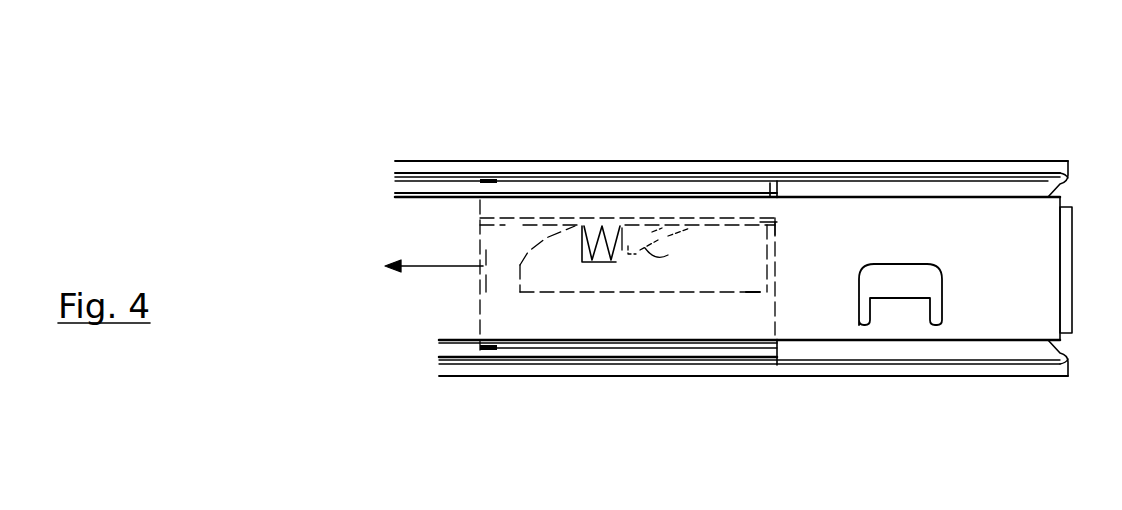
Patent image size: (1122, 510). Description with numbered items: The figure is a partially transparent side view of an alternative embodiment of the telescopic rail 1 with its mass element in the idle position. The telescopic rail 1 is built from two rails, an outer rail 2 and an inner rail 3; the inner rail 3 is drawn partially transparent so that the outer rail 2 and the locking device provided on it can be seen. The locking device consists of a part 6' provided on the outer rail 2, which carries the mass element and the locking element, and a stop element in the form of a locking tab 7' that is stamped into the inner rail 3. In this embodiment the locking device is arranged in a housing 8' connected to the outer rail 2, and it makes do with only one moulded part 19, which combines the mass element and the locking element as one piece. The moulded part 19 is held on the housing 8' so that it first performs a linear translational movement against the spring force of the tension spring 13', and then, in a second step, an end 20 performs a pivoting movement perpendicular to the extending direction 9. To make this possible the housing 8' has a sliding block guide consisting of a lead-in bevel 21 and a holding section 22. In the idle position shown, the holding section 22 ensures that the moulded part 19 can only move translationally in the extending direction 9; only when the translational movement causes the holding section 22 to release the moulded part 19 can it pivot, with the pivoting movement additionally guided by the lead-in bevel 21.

The telescopic rail 1 is at (1012, 140).
The outer rail 2 is at (887, 170).
The inner rail 3 is at (807, 308).
The part 6' is at (608, 428).
The locking tab 7' is at (917, 362).
The housing 8' is at (721, 217).
The extending direction 9 is at (425, 267).
The tension spring 13' is at (623, 159).
The moulded part 19 is at (719, 250).
The end 20 is at (778, 217).
The lead-in bevel 21 is at (643, 250).
The holding section 22 is at (757, 291).